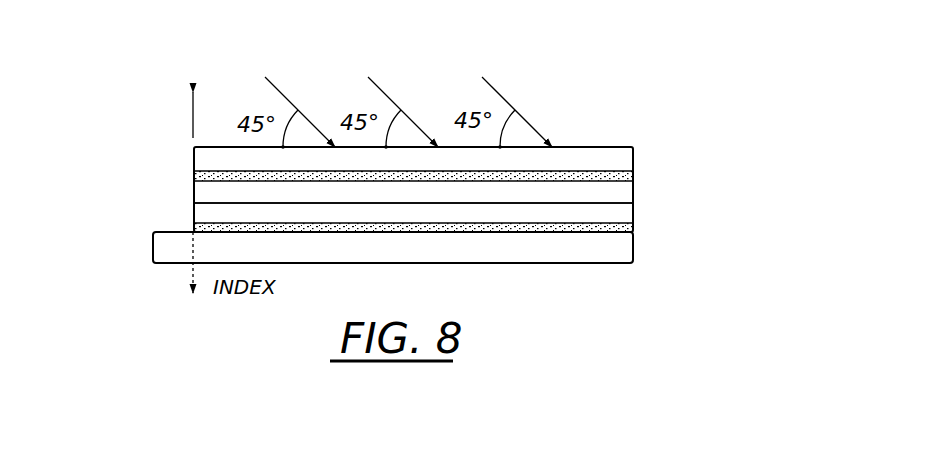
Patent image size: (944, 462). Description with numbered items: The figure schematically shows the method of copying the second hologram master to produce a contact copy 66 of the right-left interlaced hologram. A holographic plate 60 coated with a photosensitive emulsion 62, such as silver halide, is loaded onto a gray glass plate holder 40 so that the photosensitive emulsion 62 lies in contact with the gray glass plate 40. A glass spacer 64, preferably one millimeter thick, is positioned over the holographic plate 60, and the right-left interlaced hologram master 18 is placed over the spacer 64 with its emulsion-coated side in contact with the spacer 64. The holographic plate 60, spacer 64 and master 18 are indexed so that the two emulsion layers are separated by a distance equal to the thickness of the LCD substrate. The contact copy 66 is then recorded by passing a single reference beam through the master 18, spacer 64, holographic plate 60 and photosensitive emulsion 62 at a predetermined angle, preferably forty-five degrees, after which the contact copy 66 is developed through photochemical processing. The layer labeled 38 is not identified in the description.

The right-left interlaced hologram master 18 is at (194, 157).
The contact copy 66 is at (194, 206).
The top adhesive layer 38 is at (633, 172).
The glass spacer 64 is at (630, 192).
The holographic plate 60 is at (633, 210).
The photosensitive emulsion 62 is at (633, 228).
The gray glass plate holder 40 is at (633, 254).